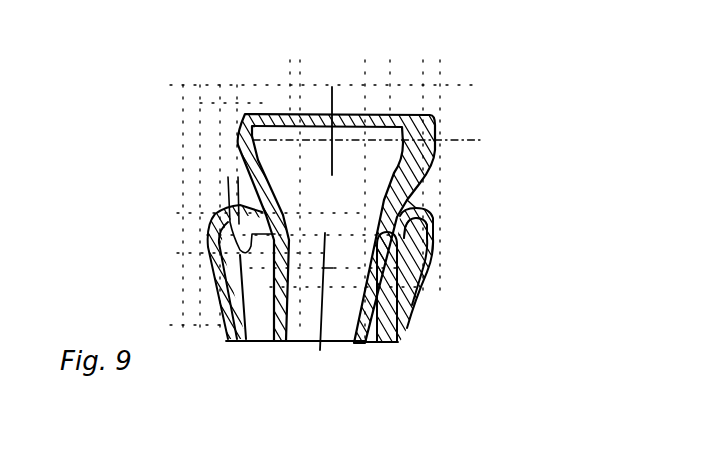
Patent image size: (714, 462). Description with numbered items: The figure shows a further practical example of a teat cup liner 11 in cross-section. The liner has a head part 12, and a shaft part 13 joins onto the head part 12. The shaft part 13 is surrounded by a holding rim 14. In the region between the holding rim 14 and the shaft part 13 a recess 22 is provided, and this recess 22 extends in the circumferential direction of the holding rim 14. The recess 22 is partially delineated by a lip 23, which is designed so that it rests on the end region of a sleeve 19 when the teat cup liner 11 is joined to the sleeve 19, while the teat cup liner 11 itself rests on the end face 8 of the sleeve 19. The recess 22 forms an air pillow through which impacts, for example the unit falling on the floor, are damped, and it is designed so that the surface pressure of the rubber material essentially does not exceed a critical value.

The end face 8 is at (417, 208).
The teat cup liner 11 is at (517, 130).
The head part 12 is at (432, 115).
The shaft part 13 is at (299, 341).
The holding rim 14 is at (417, 303).
The sleeve 19 is at (397, 342).
The recess 22 is at (400, 237).
The lip 23 is at (477, 220).